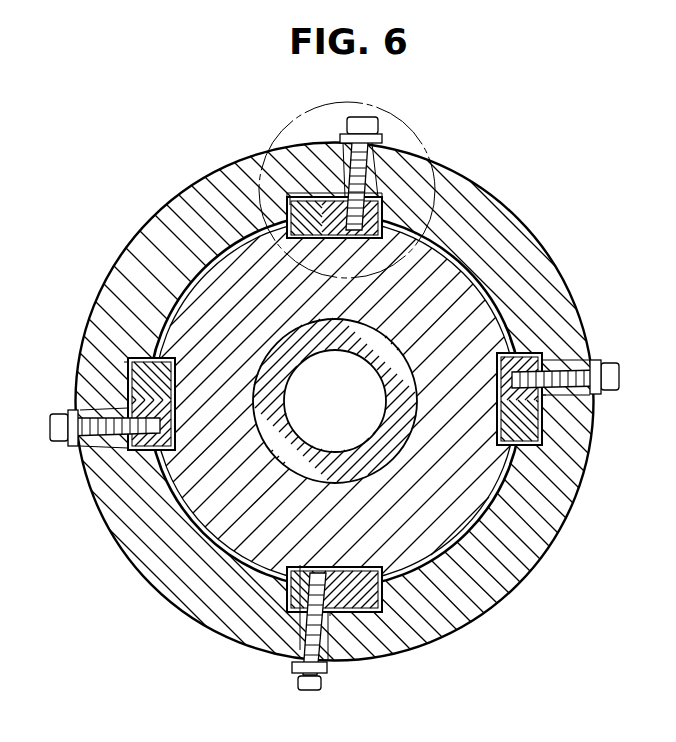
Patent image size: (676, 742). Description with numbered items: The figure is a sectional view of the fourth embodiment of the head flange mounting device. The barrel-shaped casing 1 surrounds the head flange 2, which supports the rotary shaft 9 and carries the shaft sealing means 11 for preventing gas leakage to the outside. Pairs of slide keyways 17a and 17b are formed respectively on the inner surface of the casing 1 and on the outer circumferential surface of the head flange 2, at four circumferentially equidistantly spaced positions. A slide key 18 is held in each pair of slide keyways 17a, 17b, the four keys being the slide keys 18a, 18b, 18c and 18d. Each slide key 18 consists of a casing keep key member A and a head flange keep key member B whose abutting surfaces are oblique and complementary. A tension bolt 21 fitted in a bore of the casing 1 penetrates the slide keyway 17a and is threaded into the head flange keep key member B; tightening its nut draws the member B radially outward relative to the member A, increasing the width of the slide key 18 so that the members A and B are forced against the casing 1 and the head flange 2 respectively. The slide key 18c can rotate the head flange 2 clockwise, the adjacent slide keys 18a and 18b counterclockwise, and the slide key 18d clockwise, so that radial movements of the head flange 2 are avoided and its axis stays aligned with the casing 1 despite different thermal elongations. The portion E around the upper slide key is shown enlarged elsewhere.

The casing 1 is at (548, 288).
The head flange 2 is at (459, 536).
The rotary shaft 9 is at (290, 352).
The shaft sealing means 11 is at (392, 362).
The slide keyway 17a is at (391, 617).
The slide keyway 17b is at (352, 240).
The slide key 18 is at (279, 199).
The slide key 18a is at (130, 390).
The slide key 18b is at (540, 393).
The slide key 18c is at (302, 193).
The slide key 18d is at (327, 616).
The tension bolt 21 is at (380, 140).
The portion E is at (318, 105).
The casing keep key member A is at (341, 396).
The head flange keep key member B is at (465, 260).